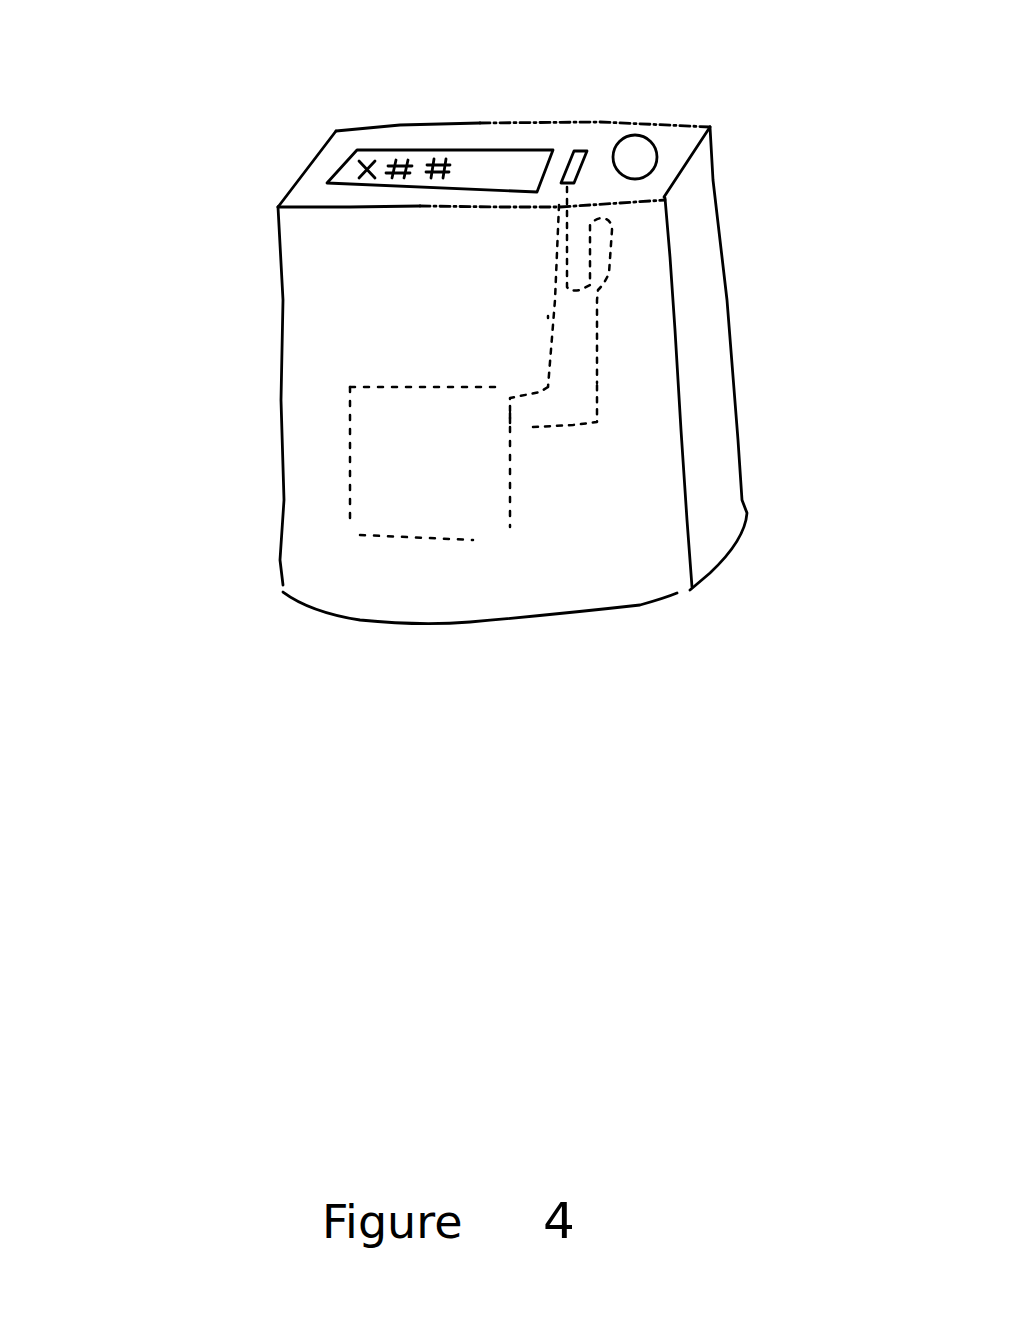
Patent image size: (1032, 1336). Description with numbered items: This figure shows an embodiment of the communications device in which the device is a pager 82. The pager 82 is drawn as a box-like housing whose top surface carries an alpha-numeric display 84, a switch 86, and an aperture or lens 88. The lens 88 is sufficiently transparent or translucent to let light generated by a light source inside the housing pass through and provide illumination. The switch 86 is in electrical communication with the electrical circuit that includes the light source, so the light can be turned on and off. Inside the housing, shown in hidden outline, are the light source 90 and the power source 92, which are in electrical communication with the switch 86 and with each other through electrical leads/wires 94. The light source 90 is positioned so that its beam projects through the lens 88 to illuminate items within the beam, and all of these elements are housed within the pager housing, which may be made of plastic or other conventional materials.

The pager 82 is at (728, 333).
The alpha-numeric display 84 is at (508, 163).
The switch 86 is at (587, 152).
The aperture or lens 88 is at (643, 152).
The light source 90 is at (603, 248).
The power source 92 is at (482, 495).
The electrical leads/wires 94 is at (547, 315).